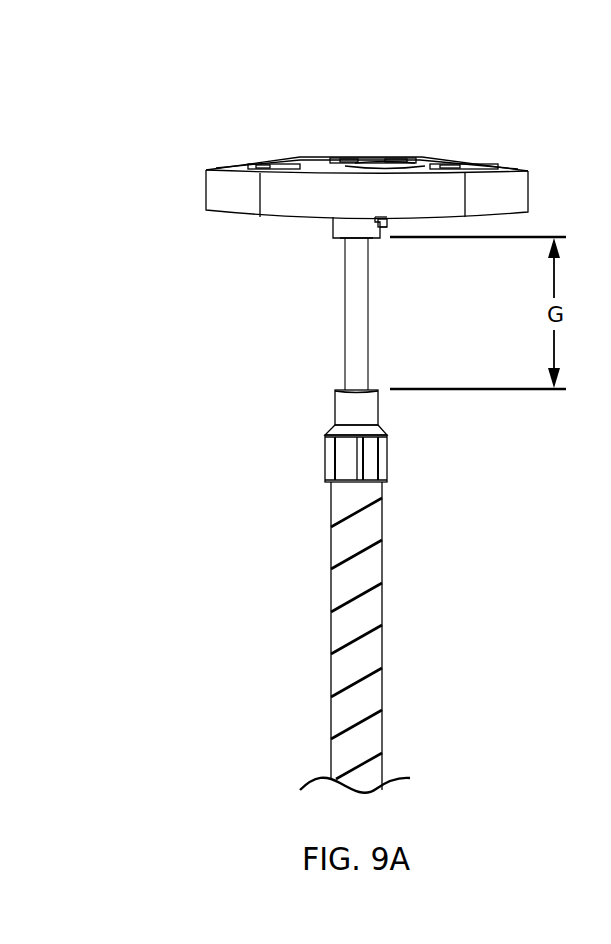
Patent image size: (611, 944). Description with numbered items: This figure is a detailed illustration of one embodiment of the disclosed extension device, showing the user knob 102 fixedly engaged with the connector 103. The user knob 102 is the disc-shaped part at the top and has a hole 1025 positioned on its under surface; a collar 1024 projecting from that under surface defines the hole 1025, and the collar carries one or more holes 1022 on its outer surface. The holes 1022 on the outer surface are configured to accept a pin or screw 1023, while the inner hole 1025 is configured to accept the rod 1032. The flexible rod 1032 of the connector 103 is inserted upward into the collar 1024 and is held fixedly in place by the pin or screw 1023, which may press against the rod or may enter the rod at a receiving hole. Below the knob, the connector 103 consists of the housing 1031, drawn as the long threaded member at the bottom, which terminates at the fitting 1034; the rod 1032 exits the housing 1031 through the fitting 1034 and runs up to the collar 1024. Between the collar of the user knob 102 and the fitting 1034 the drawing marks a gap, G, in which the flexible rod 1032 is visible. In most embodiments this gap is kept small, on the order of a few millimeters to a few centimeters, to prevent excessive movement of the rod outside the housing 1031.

The user knob 102 is at (182, 228).
The collar holes 1022 is at (378, 223).
The pin or screw 1023 is at (390, 223).
The collar 1024 is at (333, 222).
The hole 1025 is at (352, 238).
The rod 1032 is at (345, 321).
The connector 103 is at (282, 463).
The fitting 1034 is at (384, 433).
The housing 1031 is at (384, 607).